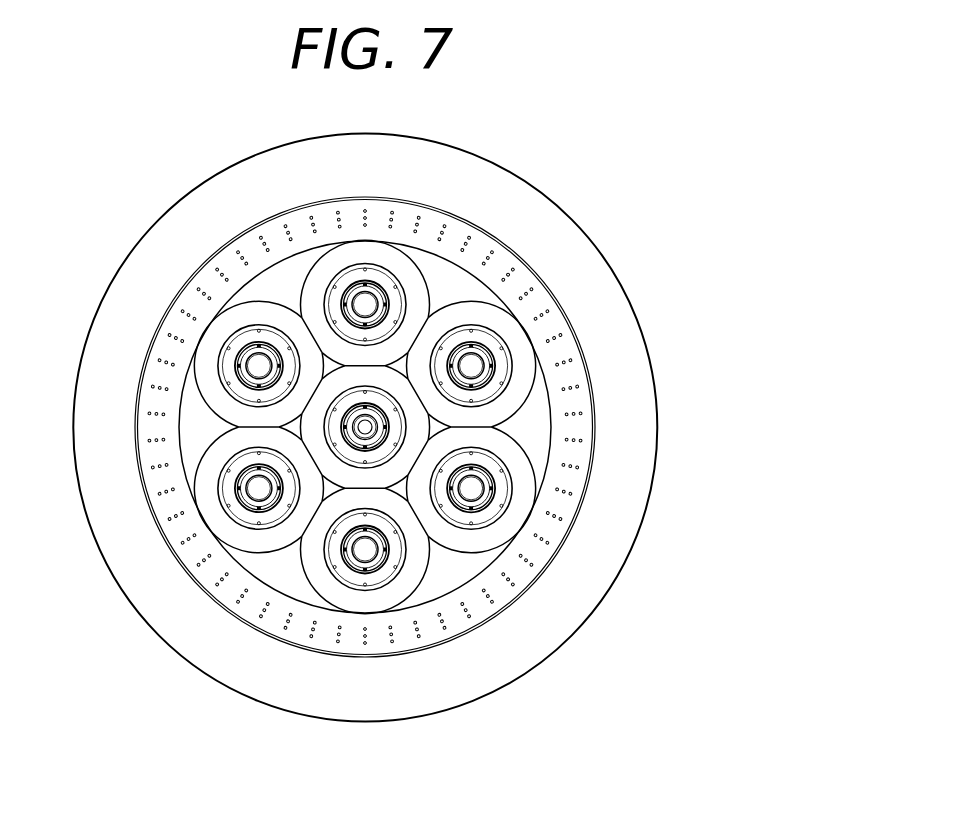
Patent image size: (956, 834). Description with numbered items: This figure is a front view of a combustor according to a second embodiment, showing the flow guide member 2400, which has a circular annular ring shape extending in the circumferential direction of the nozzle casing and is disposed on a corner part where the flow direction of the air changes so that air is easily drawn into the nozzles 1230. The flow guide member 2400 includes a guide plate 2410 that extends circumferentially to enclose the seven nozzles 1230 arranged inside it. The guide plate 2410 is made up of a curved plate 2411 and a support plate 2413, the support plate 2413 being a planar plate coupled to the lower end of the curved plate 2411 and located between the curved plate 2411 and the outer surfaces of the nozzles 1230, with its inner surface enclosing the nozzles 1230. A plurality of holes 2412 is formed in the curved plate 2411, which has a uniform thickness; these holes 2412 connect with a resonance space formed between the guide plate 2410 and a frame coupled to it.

The flow guide member 2400 is at (487, 231).
The guide plate 2410 is at (468, 427).
The curved plate 2411 is at (570, 483).
The holes 2412 is at (562, 335).
The support plate 2413 is at (542, 437).
The nozzles 1230 is at (512, 396).